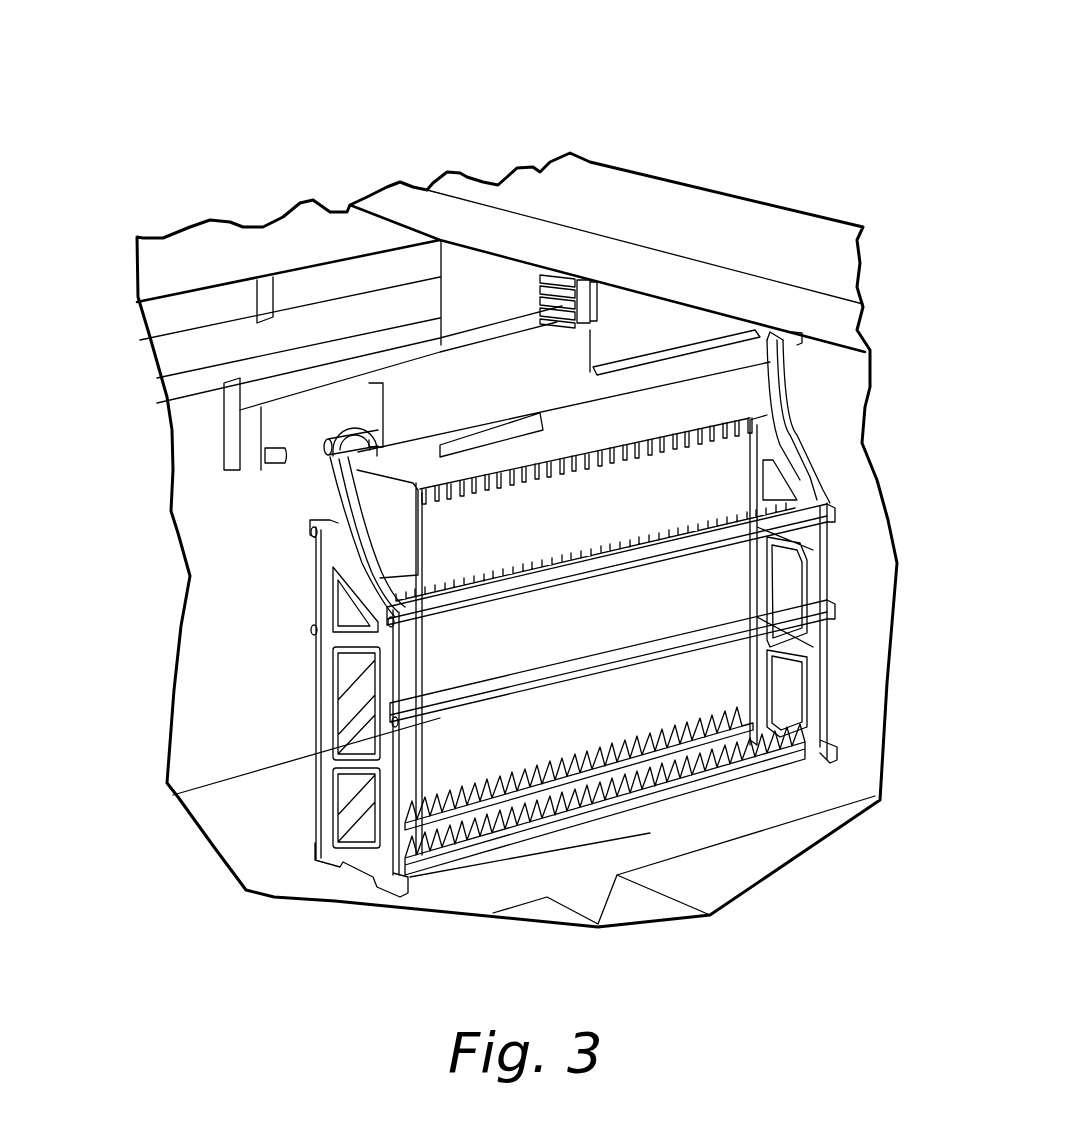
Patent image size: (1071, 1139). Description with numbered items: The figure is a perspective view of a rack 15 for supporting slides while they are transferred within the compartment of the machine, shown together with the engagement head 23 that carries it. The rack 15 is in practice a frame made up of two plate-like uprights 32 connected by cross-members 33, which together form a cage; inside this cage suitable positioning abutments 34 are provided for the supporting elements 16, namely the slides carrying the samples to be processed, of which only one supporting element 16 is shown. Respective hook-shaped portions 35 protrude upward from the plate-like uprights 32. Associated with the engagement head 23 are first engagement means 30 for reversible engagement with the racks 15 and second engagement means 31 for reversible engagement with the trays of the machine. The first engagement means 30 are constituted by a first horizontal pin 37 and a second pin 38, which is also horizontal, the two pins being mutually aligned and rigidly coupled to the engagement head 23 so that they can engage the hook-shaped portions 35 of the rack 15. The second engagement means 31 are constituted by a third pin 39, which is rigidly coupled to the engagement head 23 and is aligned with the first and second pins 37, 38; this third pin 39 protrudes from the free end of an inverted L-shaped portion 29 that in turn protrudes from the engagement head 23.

The rack 15 is at (803, 459).
The supporting element 16 is at (400, 702).
The engagement head 23 is at (522, 376).
The inverted L-shaped portion 29 is at (254, 398).
The first engagement means 30 is at (327, 442).
The second engagement means 31 is at (274, 468).
The plate-like upright 32 is at (329, 750).
The cross-member 33 is at (537, 687).
The positioning abutment 34 is at (620, 463).
The hook-shaped portion 35 is at (348, 427).
The first horizontal pin 37 is at (323, 443).
The second pin 38 is at (720, 383).
The third pin 39 is at (270, 450).